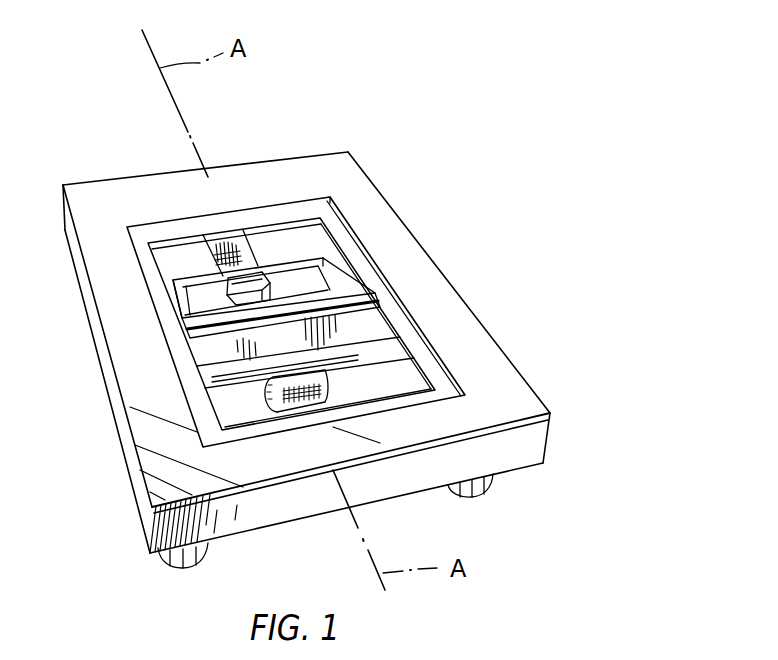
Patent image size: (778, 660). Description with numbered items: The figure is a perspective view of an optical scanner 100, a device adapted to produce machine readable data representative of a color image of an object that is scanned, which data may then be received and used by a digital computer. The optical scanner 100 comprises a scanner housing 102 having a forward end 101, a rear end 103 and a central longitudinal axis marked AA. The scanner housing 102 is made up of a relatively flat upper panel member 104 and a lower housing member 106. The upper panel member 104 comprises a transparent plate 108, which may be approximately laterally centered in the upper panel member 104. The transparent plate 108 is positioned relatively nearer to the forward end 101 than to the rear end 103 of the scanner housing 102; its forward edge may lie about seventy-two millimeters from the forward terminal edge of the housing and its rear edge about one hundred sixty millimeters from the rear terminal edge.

The optical scanner 100 is at (441, 183).
The forward end 101 is at (378, 458).
The scanner housing 102 is at (483, 320).
The rear end 103 is at (198, 186).
The upper panel member 104 is at (505, 395).
The lower housing member 106 is at (523, 446).
The transparent plate 108 is at (281, 247).